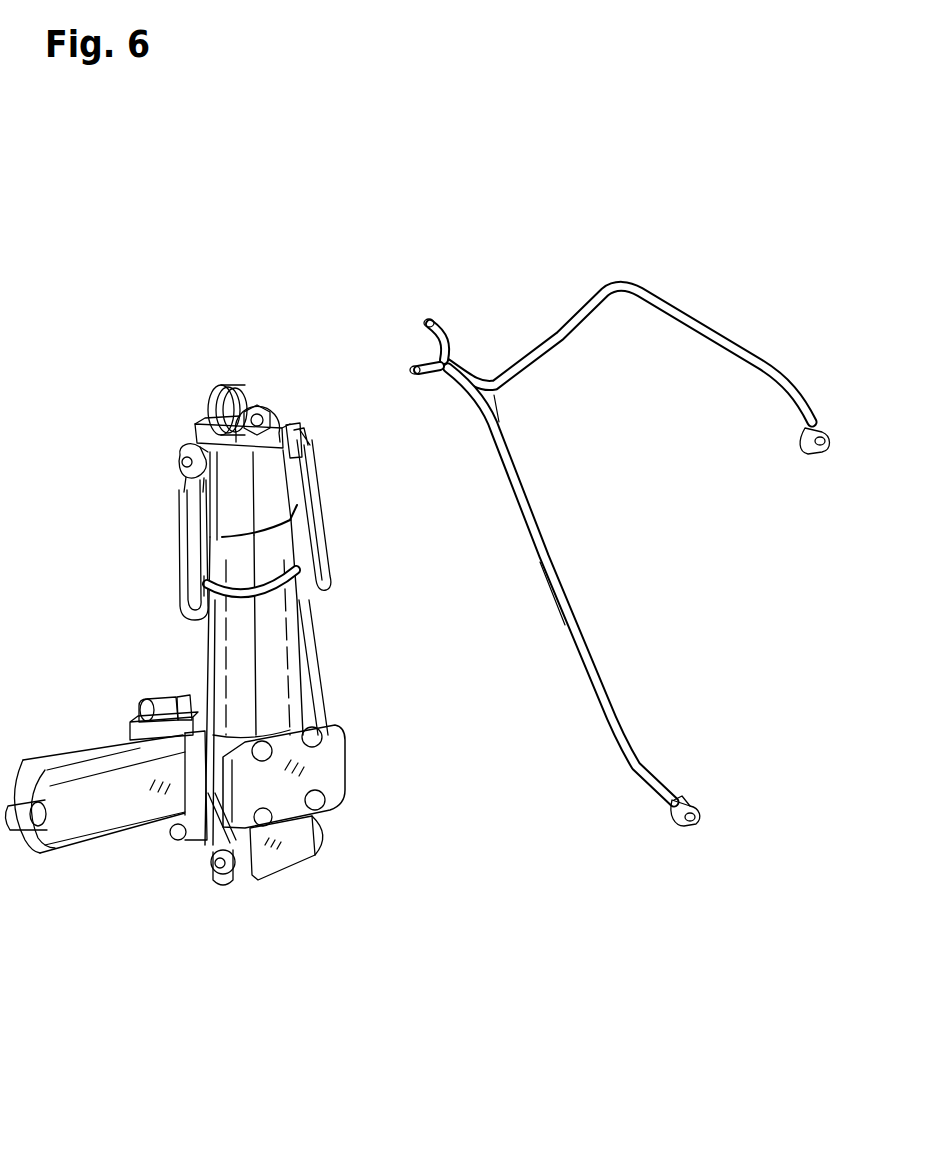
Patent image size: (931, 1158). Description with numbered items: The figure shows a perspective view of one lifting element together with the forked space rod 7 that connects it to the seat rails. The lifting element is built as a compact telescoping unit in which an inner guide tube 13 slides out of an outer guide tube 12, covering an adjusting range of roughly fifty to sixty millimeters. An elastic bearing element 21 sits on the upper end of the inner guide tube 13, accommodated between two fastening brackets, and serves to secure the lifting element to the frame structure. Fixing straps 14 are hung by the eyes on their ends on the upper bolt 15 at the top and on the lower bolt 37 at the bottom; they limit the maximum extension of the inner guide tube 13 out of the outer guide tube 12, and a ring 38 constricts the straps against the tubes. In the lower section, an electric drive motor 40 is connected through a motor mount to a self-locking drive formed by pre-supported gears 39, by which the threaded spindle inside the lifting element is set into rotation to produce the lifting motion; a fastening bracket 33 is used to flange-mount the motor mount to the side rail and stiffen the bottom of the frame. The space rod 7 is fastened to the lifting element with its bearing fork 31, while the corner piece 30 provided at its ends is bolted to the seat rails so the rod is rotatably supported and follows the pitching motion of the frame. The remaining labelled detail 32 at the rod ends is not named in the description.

The space rod 7 is at (563, 322).
The outer guide tube 12 is at (283, 655).
The inner guide tube 13 is at (237, 508).
The fixing straps 14 is at (188, 568).
The upper bolt 15 is at (186, 460).
The elastic bearing element 21 is at (228, 385).
The corner piece 30 is at (808, 456).
The bearing fork 31 is at (403, 321).
The lug / eye 32 is at (804, 433).
The fastening bracket 33 is at (288, 452).
The bolt 37 is at (226, 870).
The ring 38 is at (292, 592).
The pre-supported gears 39 is at (332, 765).
The drive motor 40 is at (90, 752).